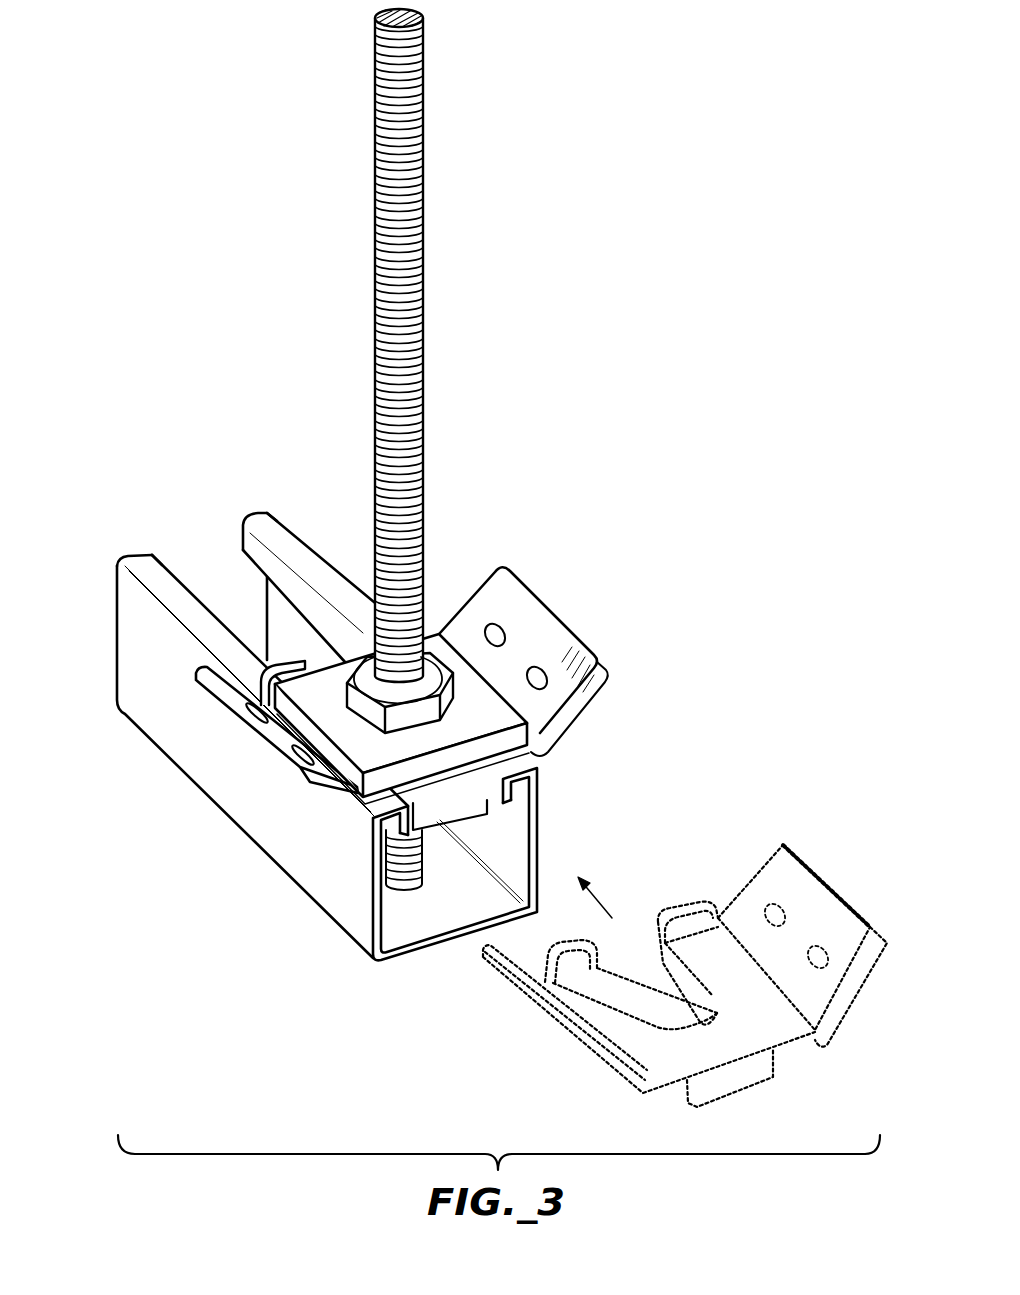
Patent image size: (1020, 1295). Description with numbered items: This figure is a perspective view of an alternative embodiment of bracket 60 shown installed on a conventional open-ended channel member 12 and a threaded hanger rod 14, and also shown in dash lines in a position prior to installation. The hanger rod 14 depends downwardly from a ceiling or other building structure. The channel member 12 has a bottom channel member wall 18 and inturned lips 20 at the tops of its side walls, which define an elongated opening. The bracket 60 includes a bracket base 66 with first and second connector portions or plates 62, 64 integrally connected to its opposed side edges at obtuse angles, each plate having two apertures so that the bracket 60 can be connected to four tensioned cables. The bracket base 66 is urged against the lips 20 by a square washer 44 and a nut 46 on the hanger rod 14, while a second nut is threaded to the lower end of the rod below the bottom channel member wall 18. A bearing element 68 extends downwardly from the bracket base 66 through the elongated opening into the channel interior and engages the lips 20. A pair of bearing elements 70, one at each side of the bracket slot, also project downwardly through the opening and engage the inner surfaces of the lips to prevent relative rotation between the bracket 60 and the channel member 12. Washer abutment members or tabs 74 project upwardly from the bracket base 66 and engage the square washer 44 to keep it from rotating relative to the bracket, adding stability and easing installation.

The open-ended channel member 12 is at (300, 721).
The threaded hanger rod 14 is at (374, 183).
The bottom channel member wall 18 is at (480, 910).
The inturned lips 20 is at (262, 520).
The square washer 44 is at (488, 717).
The nut 46 is at (300, 778).
The bracket 60 is at (385, 695).
The first connector portion or plate 62 is at (262, 720).
The second connector portion or plate 64 is at (506, 580).
The bracket base 66 is at (403, 759).
The bearing element 68 is at (457, 805).
The bearing element 70 is at (687, 973).
The washer abutment members or tabs 74 is at (292, 662).